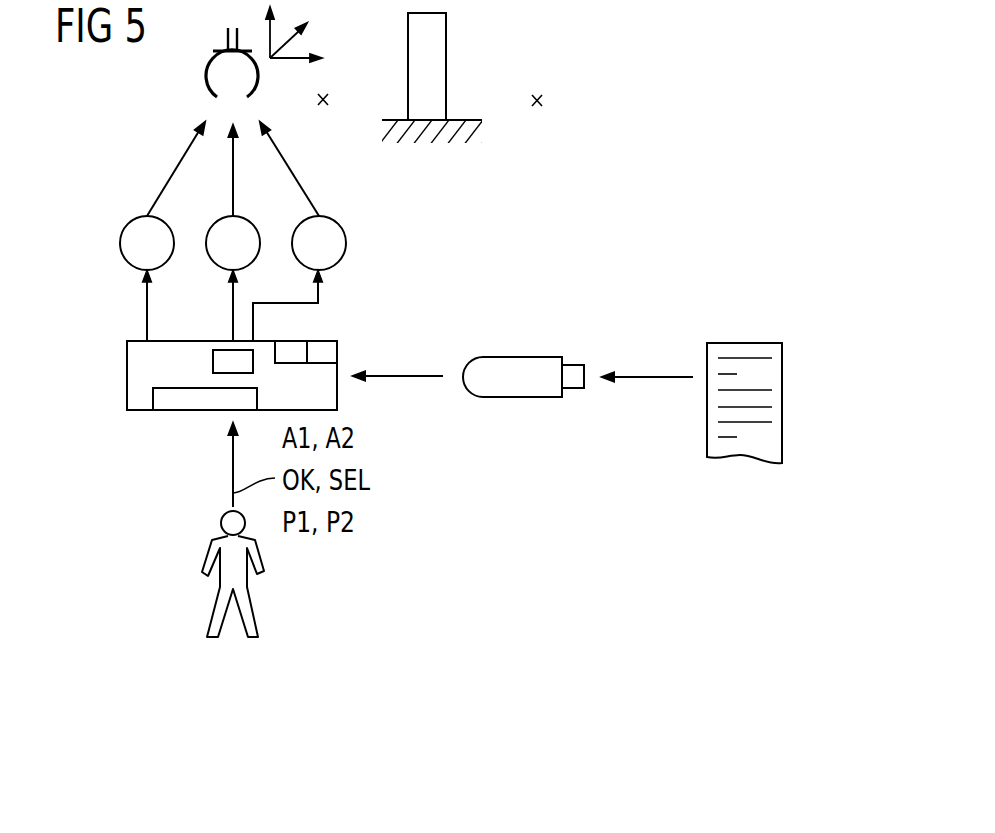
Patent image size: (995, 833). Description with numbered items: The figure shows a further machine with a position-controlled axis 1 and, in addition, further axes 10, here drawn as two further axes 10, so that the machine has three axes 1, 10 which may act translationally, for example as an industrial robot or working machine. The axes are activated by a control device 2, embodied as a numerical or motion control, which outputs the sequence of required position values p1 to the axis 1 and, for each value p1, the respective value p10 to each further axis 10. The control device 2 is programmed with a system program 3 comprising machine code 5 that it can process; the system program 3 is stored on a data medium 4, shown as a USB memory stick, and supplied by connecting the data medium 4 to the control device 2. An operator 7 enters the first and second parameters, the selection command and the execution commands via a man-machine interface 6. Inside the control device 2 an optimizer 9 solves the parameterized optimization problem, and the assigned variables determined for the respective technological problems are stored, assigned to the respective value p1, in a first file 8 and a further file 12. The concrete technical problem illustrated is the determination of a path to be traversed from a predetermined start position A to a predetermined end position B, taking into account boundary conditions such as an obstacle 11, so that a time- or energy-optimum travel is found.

The axis 1 is at (120, 243).
The further axis 10 is at (243, 216).
The control device 2 is at (127, 372).
The optimizer 9 is at (220, 347).
The first file 8 is at (330, 355).
The file 12 is at (290, 355).
The man-machine interface 6 is at (177, 398).
The operator 7 is at (205, 555).
The data medium 4 is at (523, 357).
The system program 3 is at (782, 368).
The machine code 5 is at (768, 426).
The obstacle 11 is at (446, 62).
The required position value p1 is at (145, 314).
The value of further axis p10 is at (237, 297).
The start position A is at (323, 104).
The end position B is at (537, 105).